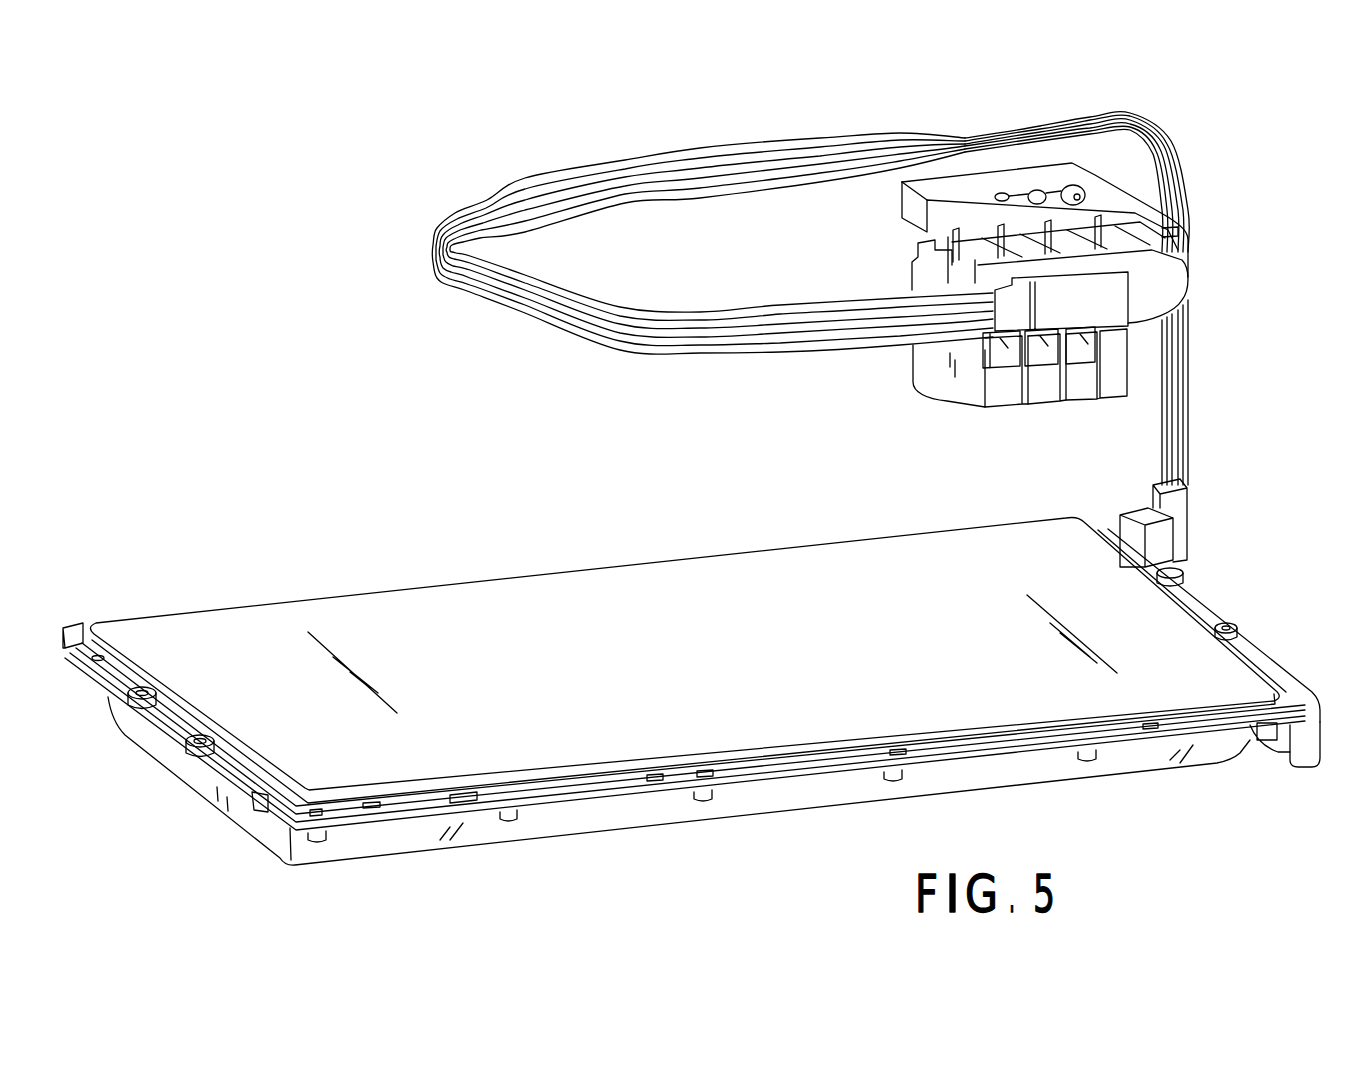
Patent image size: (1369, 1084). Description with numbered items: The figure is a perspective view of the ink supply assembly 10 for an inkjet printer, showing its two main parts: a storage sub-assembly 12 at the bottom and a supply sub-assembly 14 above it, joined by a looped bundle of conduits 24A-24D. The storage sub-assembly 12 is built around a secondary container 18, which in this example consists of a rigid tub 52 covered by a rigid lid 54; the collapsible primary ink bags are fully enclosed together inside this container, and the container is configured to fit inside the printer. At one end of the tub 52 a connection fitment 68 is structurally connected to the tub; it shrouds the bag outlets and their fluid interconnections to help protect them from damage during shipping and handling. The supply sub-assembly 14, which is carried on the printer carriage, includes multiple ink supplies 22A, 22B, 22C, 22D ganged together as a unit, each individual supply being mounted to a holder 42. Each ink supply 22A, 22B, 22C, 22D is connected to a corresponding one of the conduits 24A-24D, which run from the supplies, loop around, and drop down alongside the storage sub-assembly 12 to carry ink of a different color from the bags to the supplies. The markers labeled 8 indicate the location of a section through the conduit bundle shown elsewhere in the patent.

The section view indicator 8 is at (758, 103).
The ink supply assembly 10 is at (1259, 197).
The storage sub-assembly 12 is at (888, 511).
The supply sub-assembly 14 is at (884, 372).
The secondary container 18 is at (210, 843).
The ink supply 22A is at (970, 392).
The ink supply 22B is at (1033, 400).
The ink supply 22C is at (1073, 390).
The ink supply 22D is at (1118, 390).
The conduits 24A-24D is at (1190, 362).
The holder 42 is at (1173, 278).
The tub 52 is at (167, 757).
The lid 54 is at (153, 623).
The connection fitment 68 is at (1275, 752).